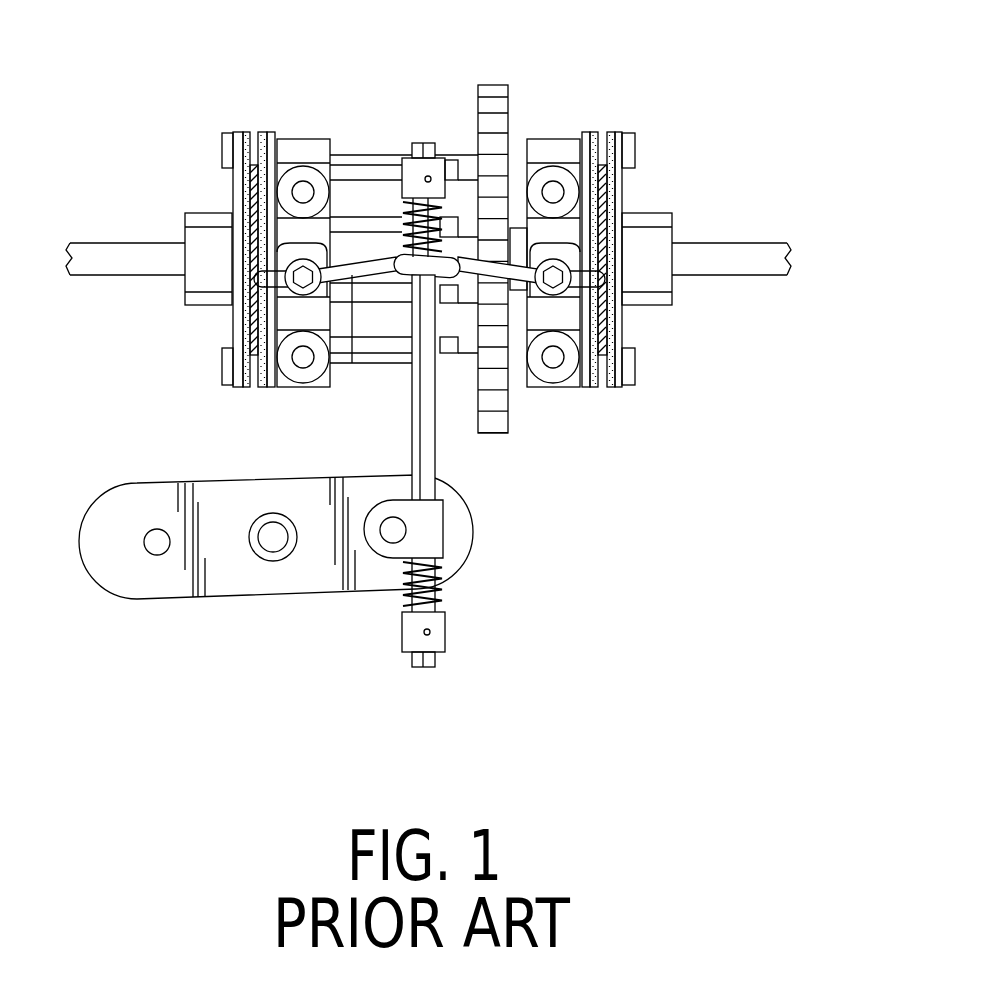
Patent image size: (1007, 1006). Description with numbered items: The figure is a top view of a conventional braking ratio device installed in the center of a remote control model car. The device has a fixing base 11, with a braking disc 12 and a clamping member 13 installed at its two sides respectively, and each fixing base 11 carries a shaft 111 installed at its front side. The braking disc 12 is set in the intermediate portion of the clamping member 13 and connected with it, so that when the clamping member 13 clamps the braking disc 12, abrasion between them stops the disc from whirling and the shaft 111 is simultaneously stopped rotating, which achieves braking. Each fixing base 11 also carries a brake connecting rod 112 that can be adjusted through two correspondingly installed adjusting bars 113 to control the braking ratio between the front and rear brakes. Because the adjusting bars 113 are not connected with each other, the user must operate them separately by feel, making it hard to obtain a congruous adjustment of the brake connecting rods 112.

The fixing base 11 is at (648, 213).
The shaft 111 is at (742, 257).
The braking disc 12 is at (600, 132).
The clamping member 13 is at (587, 133).
The brake connecting rod 112 is at (467, 262).
The adjusting bar 113 is at (405, 172).